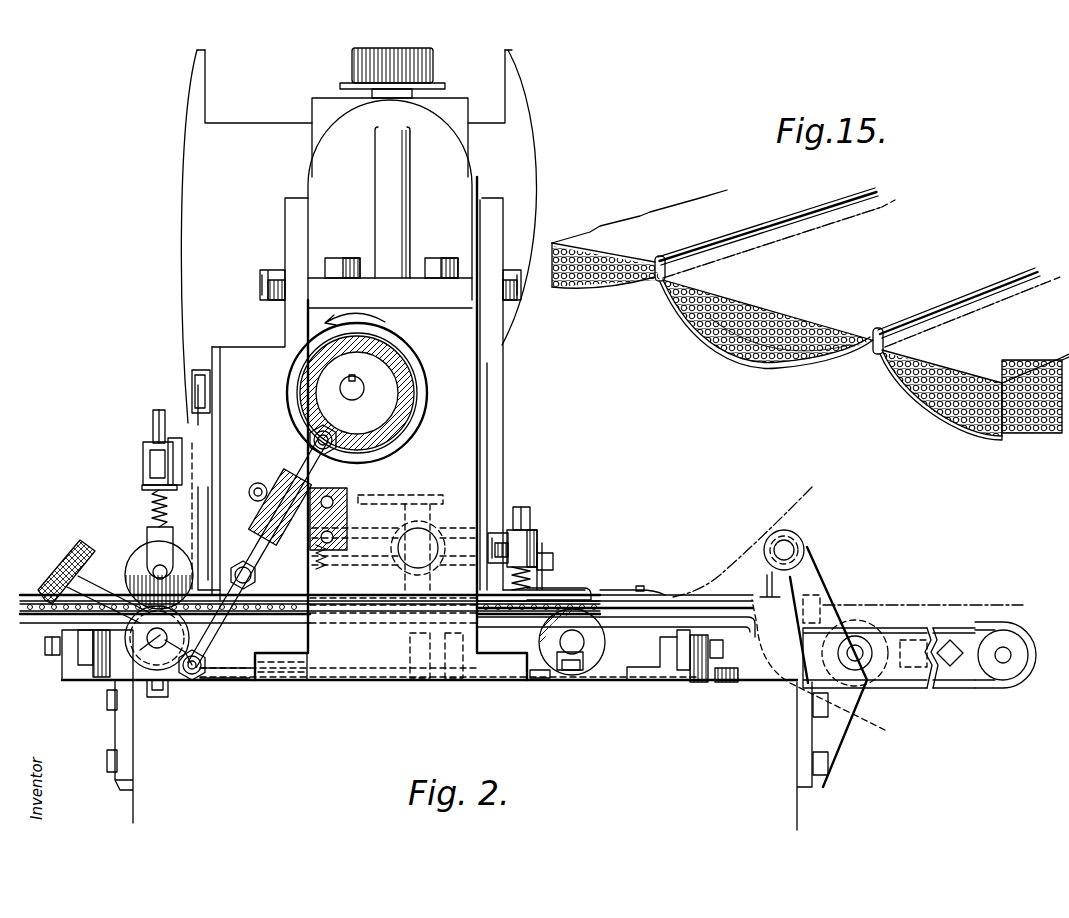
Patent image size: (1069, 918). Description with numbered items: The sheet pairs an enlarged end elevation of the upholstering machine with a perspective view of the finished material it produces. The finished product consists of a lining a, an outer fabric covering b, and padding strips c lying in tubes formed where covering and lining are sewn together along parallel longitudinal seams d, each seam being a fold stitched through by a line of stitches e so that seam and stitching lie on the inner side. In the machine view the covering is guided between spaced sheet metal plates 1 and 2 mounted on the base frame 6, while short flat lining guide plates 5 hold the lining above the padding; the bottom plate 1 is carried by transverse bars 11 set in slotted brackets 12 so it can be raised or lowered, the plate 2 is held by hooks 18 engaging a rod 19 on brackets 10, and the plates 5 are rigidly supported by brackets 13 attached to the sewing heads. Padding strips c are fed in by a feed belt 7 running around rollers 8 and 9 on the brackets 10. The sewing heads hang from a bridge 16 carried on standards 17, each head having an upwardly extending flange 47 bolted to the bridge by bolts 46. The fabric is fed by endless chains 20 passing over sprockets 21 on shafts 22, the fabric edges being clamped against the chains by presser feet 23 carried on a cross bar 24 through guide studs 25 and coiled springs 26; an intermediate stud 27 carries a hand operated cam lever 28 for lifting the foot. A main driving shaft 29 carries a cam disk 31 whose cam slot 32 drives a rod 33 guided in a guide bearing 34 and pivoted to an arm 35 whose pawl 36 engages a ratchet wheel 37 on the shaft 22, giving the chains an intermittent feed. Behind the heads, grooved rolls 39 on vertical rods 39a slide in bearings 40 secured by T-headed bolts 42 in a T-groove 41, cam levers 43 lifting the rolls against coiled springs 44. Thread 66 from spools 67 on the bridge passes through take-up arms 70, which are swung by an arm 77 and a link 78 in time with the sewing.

In FIG. 2, the plate 1 is at (22, 605).
In FIG. 2, the plate 2 is at (42, 594).
In FIG. 2, the lining guide plates 5 is at (648, 590).
In FIG. 2, the base or supporting frame 6 is at (429, 704).
In FIG. 2, the feed belt 7 is at (950, 638).
In FIG. 2, the roller 8 is at (1003, 636).
In FIG. 2, the roller 9 is at (860, 638).
In FIG. 2, the brackets 10 is at (820, 578).
In FIG. 2, the transverse supporting bars 11 is at (80, 628).
In FIG. 2, the slotted brackets 12 is at (95, 722).
In FIG. 2, the brackets 13 is at (545, 568).
In FIG. 2, the supporting frame member 16 is at (355, 205).
In FIG. 2, the standards 17 is at (359, 428).
In FIG. 2, the hooks 18 is at (768, 572).
In FIG. 2, the rod 19 is at (788, 546).
In FIG. 2, the endless carriers or chains 20 is at (520, 612).
In FIG. 2, the sprockets 21 is at (600, 640).
In FIG. 2, the shafts 22 is at (120, 672).
In FIG. 2, the presser feet 23 is at (272, 595).
In FIG. 2, the cross bar 24 is at (537, 535).
In FIG. 2, the vertical guide studs 25 is at (522, 507).
In FIG. 2, the coiled springs 26 is at (520, 560).
In FIG. 2, the intermediate stud 27 is at (437, 535).
In FIG. 2, the hand operated cam lever 28 is at (412, 495).
In FIG. 2, the main driving shaft 29 is at (357, 396).
In FIG. 2, the cam disk 31 is at (292, 370).
In FIG. 2, the cam slot 32 is at (312, 393).
In FIG. 2, the rod 33 is at (302, 466).
In FIG. 2, the guide bearing 34 is at (280, 490).
In FIG. 2, the arm 35 is at (168, 690).
In FIG. 2, the pawl 36 is at (128, 665).
In FIG. 2, the ratchet wheel 37 is at (212, 656).
In FIG. 2, the grooved rolls 39 is at (136, 562).
In FIG. 2, the vertical bar or rod 39a is at (147, 535).
In FIG. 2, the bearing 40 is at (143, 448).
In FIG. 2, the T-groove 41 is at (178, 440).
In FIG. 2, the T-headed bolts 42 is at (148, 465).
In FIG. 2, the hand operated cam levers 43 is at (153, 422).
In FIG. 2, the coiled springs 44 is at (152, 508).
In FIG. 2, the bolts 46 is at (260, 285).
In FIG. 2, the flange 47 is at (285, 228).
In FIG. 2, the thread 66 is at (186, 292).
In FIG. 2, the spools 67 is at (352, 66).
In FIG. 2, the take-up arms 70 is at (208, 522).
In FIG. 2, the arm 77 is at (208, 390).
In FIG. 2, the link 78 is at (212, 405).
In FIG. 2, the lining a is at (766, 525).
In FIG. 15, the lining a is at (810, 286).
In FIG. 2, the outer fabric covering b is at (878, 727).
In FIG. 15, the outer fabric covering b is at (722, 342).
In FIG. 15, the padding strips c is at (780, 355).
In FIG. 15, the seams d is at (770, 252).
In FIG. 15, the line of stitches e is at (800, 236).